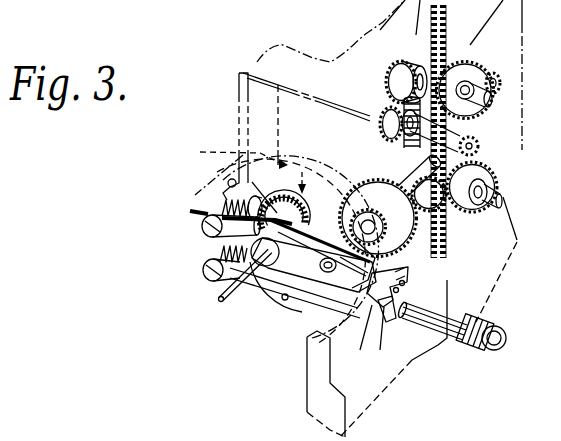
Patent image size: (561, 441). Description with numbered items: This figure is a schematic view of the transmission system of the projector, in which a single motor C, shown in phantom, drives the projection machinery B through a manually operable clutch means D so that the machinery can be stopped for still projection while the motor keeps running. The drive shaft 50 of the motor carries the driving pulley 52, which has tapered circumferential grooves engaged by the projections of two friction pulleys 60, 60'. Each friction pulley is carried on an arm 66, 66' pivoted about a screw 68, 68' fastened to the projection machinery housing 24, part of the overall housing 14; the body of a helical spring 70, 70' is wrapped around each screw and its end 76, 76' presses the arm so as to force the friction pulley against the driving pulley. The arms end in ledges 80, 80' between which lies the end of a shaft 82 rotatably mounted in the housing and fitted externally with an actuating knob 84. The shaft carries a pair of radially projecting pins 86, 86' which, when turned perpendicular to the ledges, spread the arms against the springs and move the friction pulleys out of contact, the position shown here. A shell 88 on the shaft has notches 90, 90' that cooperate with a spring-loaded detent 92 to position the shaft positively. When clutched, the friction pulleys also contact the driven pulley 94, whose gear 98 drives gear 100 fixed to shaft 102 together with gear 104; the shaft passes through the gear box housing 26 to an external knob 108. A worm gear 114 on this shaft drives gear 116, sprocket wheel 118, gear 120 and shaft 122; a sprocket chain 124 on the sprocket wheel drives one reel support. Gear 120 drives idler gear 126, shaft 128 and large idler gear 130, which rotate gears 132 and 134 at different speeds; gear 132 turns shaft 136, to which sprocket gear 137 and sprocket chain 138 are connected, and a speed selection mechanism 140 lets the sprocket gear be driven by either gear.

The housing 14 is at (333, 50).
The projection machinery housing 24 is at (246, 73).
The gear box housing 26 is at (515, 34).
The drive shaft 50 is at (271, 292).
The driving pulley 52 is at (311, 248).
The friction pulley 60 is at (322, 196).
The friction pulley 60' is at (276, 302).
The arm 66 is at (228, 201).
The arm 66' is at (298, 259).
The screw 68 is at (205, 227).
The screw 68' is at (201, 290).
The helical spring 70 is at (251, 195).
The helical spring 70' is at (214, 251).
The spring end 76 is at (258, 206).
The spring end 76' is at (245, 285).
The ledge 80 is at (388, 264).
The ledge 80' is at (377, 358).
The shaft 82 is at (438, 311).
The actuating knob 84 is at (505, 339).
The radially projecting pin 86 is at (369, 308).
The radially projecting pin 86' is at (386, 349).
The shell 88 is at (417, 270).
The notch 90 is at (423, 283).
The notch 90' is at (422, 298).
The spring-loaded detent 92 is at (393, 320).
The driven pulley 94 is at (316, 263).
The gear 98 is at (338, 223).
The gear 100 is at (373, 193).
The shaft 102 is at (410, 178).
The gear 104 is at (455, 244).
The knob 108 is at (501, 78).
The worm gear 114 is at (393, 153).
The gear 116 is at (450, 212).
The sprocket wheel 118 is at (490, 172).
The gear 120 is at (497, 185).
The shaft 122 is at (502, 198).
The sprocket chain 124 is at (512, 259).
The idler gear 126 is at (480, 146).
The shaft 128 is at (402, 108).
The large idler gear 130 is at (382, 135).
The gear 132 is at (472, 66).
The gear 134 is at (388, 68).
The shaft 136 is at (493, 100).
The sprocket gear 137 is at (440, 44).
The sprocket chain 138 is at (450, 34).
The speed selection mechanism 140 is at (404, 17).
The projection machinery B is at (510, 127).
The motor C is at (237, 156).
The clutch means D is at (303, 174).